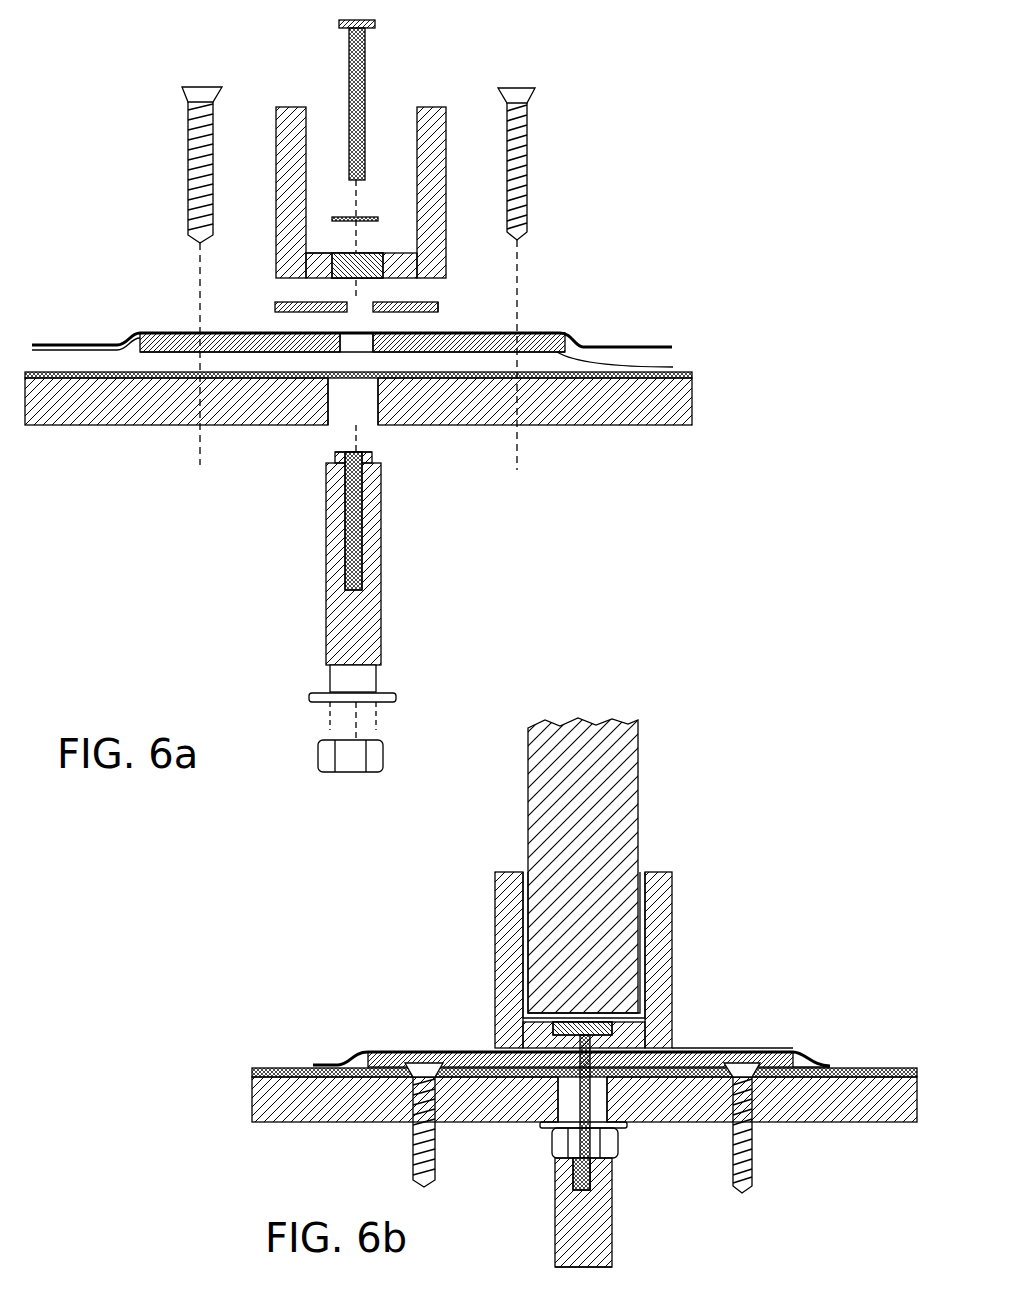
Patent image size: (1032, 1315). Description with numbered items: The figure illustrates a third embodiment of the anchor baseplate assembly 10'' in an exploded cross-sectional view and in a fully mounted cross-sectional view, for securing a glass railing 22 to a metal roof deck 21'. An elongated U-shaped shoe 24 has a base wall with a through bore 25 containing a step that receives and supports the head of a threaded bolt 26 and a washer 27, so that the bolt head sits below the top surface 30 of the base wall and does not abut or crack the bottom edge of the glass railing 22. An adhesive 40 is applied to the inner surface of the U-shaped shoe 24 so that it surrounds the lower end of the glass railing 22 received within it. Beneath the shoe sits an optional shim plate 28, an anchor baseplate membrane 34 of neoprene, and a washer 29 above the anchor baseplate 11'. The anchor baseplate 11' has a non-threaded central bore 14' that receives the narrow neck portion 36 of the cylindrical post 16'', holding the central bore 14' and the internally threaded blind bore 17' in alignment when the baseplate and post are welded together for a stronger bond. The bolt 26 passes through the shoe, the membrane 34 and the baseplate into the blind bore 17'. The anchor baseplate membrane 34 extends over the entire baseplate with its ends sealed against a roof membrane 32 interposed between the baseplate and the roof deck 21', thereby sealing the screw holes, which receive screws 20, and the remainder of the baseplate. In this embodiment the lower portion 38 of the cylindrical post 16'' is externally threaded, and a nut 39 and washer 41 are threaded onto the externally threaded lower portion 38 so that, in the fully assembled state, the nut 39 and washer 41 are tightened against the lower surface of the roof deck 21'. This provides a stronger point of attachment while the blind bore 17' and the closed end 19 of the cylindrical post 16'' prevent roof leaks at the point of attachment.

In FIG. 6a, the anchor baseplate assembly 10'' is at (615, 83).
In FIG. 6b, the anchor baseplate assembly 10'' is at (780, 834).
In FIG. 6a, the anchor baseplate 11' is at (352, 314).
In FIG. 6b, the anchor baseplate 11' is at (584, 1014).
In FIG. 6a, the non-threaded central bore 14' is at (412, 329).
In FIG. 6a, the cylindrical post 16'' is at (406, 591).
In FIG. 6b, the cylindrical post 16'' is at (635, 1212).
In FIG. 6a, the internally threaded blind bore 17' is at (404, 521).
In FIG. 6b, the closed end 19 is at (590, 1265).
In FIG. 6a, the screw 20 is at (194, 152).
In FIG. 6b, the screw 20 is at (412, 1148).
In FIG. 6a, the metal roof deck 21' is at (397, 404).
In FIG. 6b, the metal roof deck 21' is at (584, 1126).
In FIG. 6b, the glass railing 22 is at (620, 746).
In FIG. 6a, the U-shaped shoe 24 is at (450, 128).
In FIG. 6b, the U-shaped shoe 24 is at (495, 935).
In FIG. 6a, the through bore 25 is at (370, 252).
In FIG. 6b, the through bore 25 is at (582, 1028).
In FIG. 6a, the threaded bolt 26 is at (364, 56).
In FIG. 6b, the threaded bolt 26 is at (527, 1120).
In FIG. 6a, the washer 27 is at (374, 216).
In FIG. 6a, the shim plate 28 is at (438, 302).
In FIG. 6b, the shim plate 28 is at (672, 1048).
In FIG. 6a, the washer 29 is at (345, 302).
In FIG. 6a, the top surface 30 is at (316, 252).
In FIG. 6a, the roof membrane 32 is at (692, 375).
In FIG. 6b, the roof membrane 32 is at (312, 1068).
In FIG. 6a, the anchor baseplate membrane 34 is at (655, 346).
In FIG. 6b, the anchor baseplate membrane 34 is at (327, 1062).
In FIG. 6a, the narrow neck portion 36 is at (370, 455).
In FIG. 6a, the externally threaded lower portion 38 is at (629, 362).
In FIG. 6b, the externally threaded lower portion 38 is at (812, 1066).
In FIG. 6a, the nut 39 is at (383, 756).
In FIG. 6b, the nut 39 is at (556, 1144).
In FIG. 6b, the adhesive 40 is at (642, 874).
In FIG. 6a, the washer 41 is at (396, 694).
In FIG. 6b, the washer 41 is at (622, 1128).